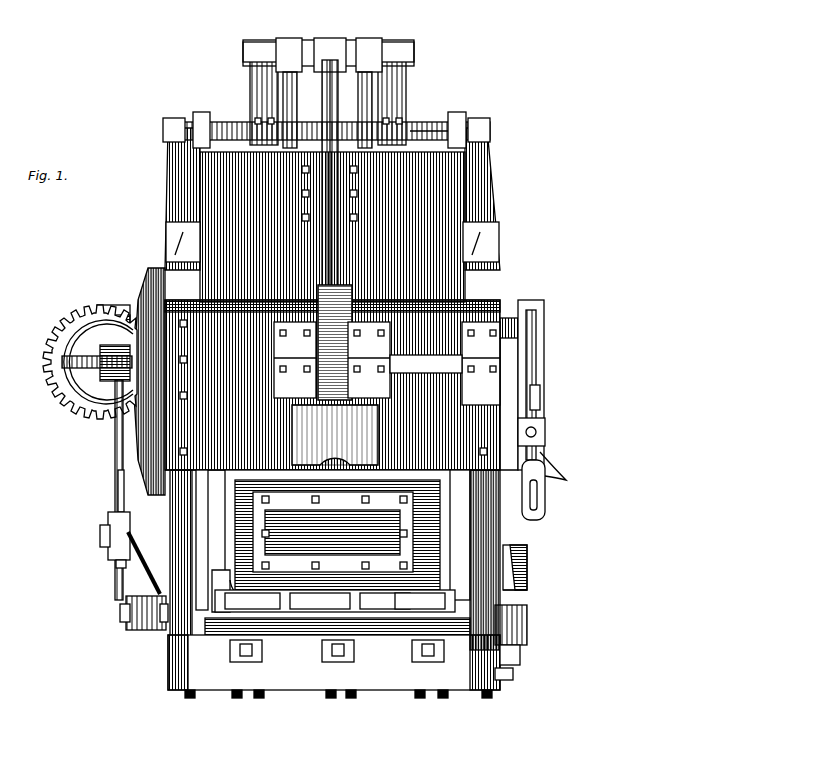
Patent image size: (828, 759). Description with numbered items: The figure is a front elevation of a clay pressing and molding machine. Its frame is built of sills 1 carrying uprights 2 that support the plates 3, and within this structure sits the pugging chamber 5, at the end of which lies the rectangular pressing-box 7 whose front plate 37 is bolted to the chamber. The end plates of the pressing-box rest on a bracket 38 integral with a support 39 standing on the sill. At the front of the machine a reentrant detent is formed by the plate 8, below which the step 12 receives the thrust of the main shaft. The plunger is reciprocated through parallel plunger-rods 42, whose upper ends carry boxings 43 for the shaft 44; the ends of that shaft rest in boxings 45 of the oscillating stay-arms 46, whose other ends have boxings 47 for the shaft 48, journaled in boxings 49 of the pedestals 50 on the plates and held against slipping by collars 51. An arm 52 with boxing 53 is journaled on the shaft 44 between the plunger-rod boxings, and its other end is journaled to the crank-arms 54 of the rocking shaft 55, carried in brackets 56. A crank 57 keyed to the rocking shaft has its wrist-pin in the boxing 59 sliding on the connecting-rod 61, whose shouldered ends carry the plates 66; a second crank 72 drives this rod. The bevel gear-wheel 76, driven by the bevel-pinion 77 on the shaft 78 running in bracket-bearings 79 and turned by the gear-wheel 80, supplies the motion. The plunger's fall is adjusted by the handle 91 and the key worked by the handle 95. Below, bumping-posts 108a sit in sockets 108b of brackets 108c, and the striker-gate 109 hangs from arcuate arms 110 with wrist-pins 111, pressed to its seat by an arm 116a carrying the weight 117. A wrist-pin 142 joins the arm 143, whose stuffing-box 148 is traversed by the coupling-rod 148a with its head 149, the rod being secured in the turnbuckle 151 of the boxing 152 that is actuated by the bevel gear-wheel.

The sills 1 is at (334, 666).
The uprights 2 is at (500, 530).
The plates 3 is at (166, 244).
The pugging chamber 5 is at (328, 40).
The pressing-box 7 is at (446, 538).
The plate 8 is at (232, 453).
The step 12 is at (335, 435).
The front plate 37 is at (330, 478).
The bracket 38 is at (180, 506).
The support 39 is at (176, 572).
The plunger-rods 42 is at (364, 103).
The boxings 43 is at (286, 44).
The shaft 44 is at (414, 50).
The boxings 45 is at (252, 48).
The oscillating stay-arms 46 is at (328, 97).
The boxings 47 is at (262, 134).
The shaft 48 is at (436, 124).
The boxings 49 is at (172, 118).
The pedestals 50 is at (172, 192).
The collars 51 is at (203, 114).
The arm 52 is at (322, 86).
The boxing 53 is at (332, 44).
The crank-arms 54 is at (335, 342).
The rocking shaft 55 is at (426, 358).
The brackets 56 is at (387, 363).
The crank 57 is at (520, 385).
The boxing 59 is at (546, 434).
The connecting-rod 61 is at (541, 406).
The plates 66 is at (546, 503).
The crank 72 is at (506, 318).
The bevel gear-wheel 76 is at (140, 280).
The bevel-pinion 77 is at (62, 380).
The shaft 78 is at (96, 364).
The bracket-bearings 79 is at (112, 395).
The gear-wheel 80 is at (70, 330).
The handle 91 is at (530, 496).
The handle 95 is at (566, 478).
The bumping-posts 108a is at (527, 618).
The sockets 108b is at (520, 656).
The brackets 108c is at (513, 682).
The striker-gate 109 is at (335, 601).
The arcuate arms 110 is at (212, 590).
The wrist-pins 111 is at (205, 628).
The arm 116a is at (527, 556).
The weight 117 is at (528, 586).
The wrist-pin 142 is at (126, 622).
The arm 143 is at (140, 560).
The stuffing-box 148 is at (108, 532).
The coupling-rod 148a is at (118, 486).
The head 149 is at (116, 564).
The turnbuckle 151 is at (115, 360).
The boxing 152 is at (110, 305).